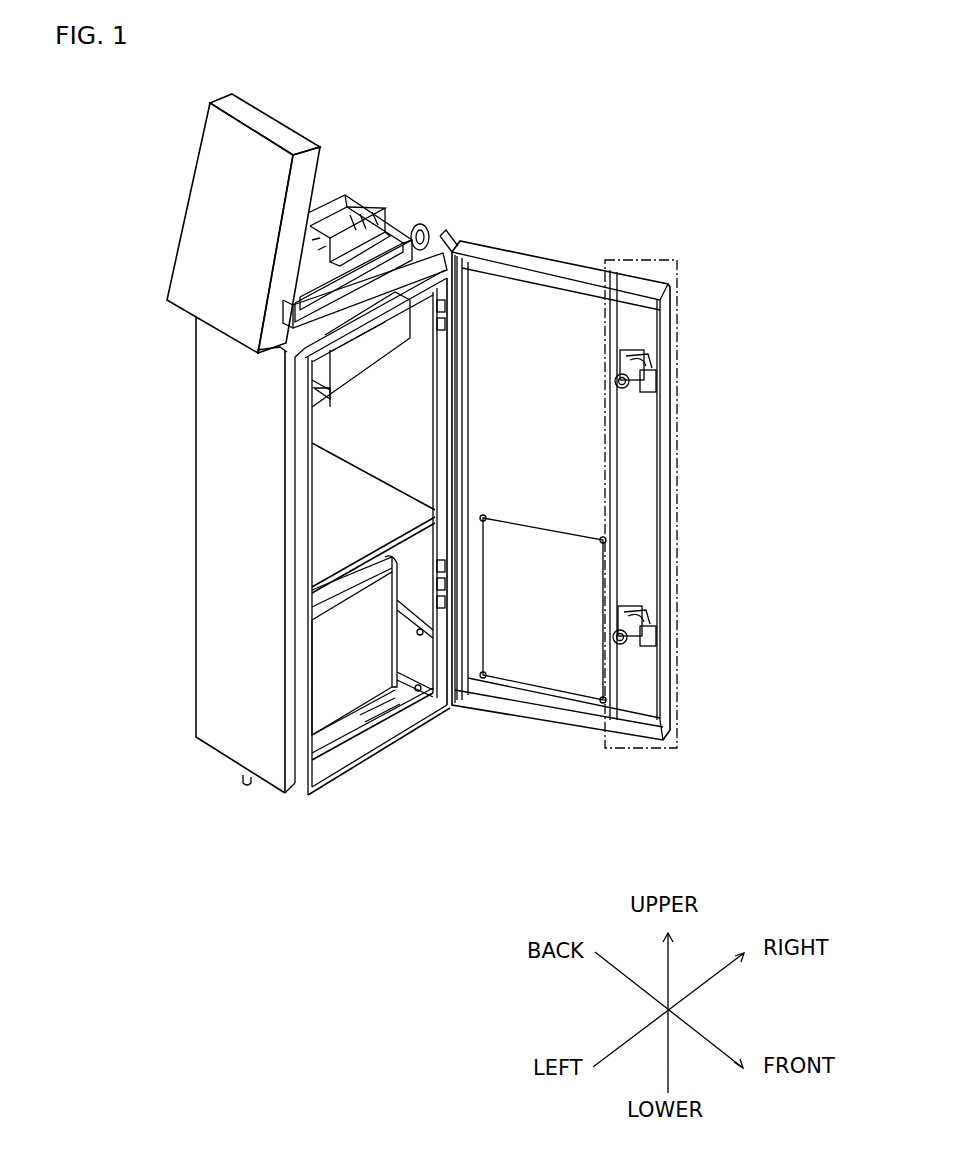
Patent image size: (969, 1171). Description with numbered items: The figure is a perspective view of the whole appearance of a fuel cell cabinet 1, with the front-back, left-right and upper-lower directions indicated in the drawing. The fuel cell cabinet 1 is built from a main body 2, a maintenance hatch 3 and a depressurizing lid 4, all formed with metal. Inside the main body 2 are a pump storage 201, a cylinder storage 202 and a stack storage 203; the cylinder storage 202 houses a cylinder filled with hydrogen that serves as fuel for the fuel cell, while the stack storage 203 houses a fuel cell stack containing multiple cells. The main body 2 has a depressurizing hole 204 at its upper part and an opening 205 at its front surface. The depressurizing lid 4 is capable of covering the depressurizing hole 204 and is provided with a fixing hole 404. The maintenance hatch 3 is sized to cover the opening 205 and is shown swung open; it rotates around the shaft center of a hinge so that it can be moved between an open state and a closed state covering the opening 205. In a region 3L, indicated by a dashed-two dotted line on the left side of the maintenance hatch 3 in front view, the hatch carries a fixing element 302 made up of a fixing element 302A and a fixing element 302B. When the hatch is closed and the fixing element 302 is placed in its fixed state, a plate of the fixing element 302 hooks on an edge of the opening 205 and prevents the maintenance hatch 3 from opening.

The fuel cell cabinet 1 is at (527, 168).
The main body 2 is at (189, 521).
The maintenance hatch 3 is at (551, 251).
The region 3L is at (676, 278).
The depressurizing lid 4 is at (175, 183).
The fixing hole 404 is at (272, 122).
The pump storage 201 is at (337, 365).
The cylinder storage 202 is at (333, 470).
The stack storage 203 is at (330, 650).
The depressurizing hole 204 is at (381, 212).
The opening 205 is at (322, 744).
The fixing element 302 is at (777, 397).
The fixing element 302A is at (658, 392).
The fixing element 302B is at (658, 645).